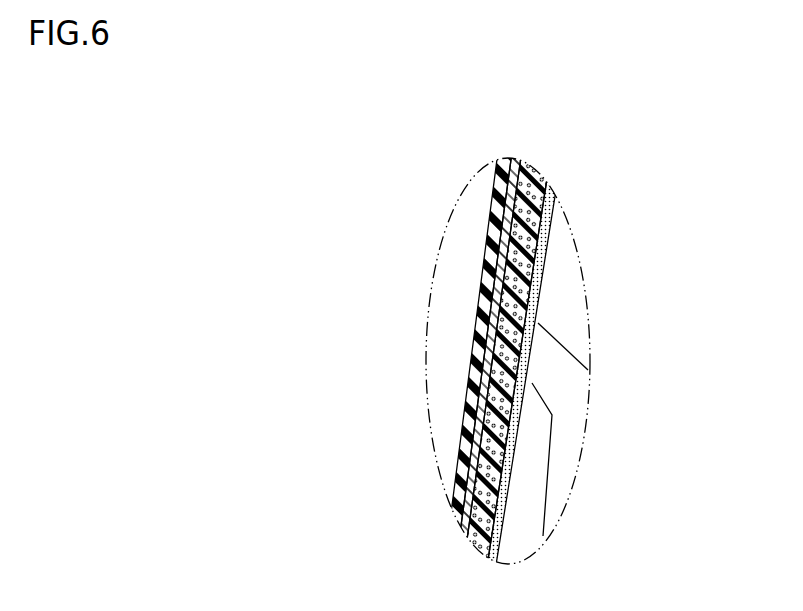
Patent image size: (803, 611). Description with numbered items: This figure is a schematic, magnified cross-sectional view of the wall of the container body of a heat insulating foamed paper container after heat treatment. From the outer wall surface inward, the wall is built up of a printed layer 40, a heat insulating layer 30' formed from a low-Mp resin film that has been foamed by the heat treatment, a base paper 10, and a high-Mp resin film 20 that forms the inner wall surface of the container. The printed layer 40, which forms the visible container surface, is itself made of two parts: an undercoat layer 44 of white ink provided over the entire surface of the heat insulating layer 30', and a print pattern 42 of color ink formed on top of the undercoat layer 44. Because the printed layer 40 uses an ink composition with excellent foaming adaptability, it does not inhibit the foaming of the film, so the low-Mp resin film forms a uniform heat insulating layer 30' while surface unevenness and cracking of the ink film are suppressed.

The base paper 10 is at (518, 160).
The high-Mp resin film 20 is at (499, 160).
The heat insulating layer 30' is at (532, 334).
The printed layer 40 is at (589, 360).
The print pattern 42 is at (539, 324).
The undercoat layer 44 is at (541, 298).